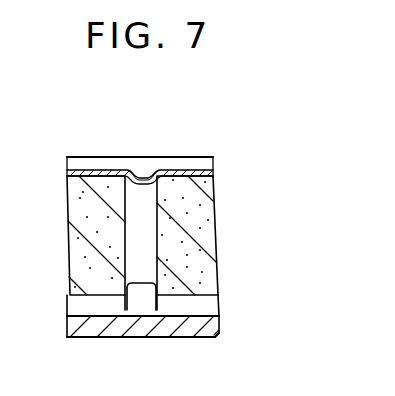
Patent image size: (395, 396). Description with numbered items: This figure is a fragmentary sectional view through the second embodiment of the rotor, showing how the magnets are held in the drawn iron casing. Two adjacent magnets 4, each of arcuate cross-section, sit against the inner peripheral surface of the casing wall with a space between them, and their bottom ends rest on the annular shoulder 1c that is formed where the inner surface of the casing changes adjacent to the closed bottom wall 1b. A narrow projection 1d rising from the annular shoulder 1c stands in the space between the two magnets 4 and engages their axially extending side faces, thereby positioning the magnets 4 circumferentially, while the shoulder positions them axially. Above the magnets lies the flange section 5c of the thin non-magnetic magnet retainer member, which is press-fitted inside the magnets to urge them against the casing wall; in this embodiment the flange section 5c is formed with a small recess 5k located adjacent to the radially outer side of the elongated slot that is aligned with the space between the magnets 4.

The magnet 4 is at (185, 187).
The flange section 5c is at (89, 172).
The small recess 5k is at (143, 180).
The bottom wall 1b is at (147, 288).
The annular shoulder 1c is at (106, 298).
The projection 1d is at (142, 289).